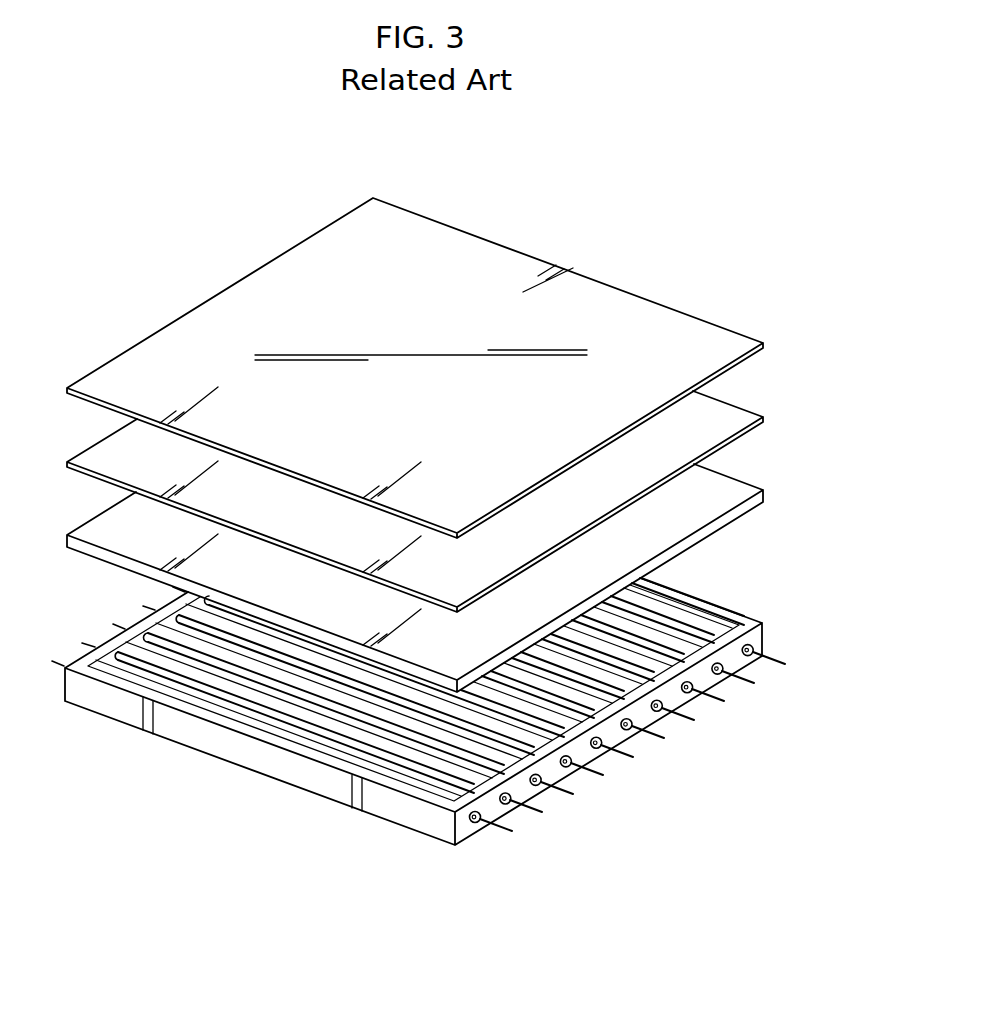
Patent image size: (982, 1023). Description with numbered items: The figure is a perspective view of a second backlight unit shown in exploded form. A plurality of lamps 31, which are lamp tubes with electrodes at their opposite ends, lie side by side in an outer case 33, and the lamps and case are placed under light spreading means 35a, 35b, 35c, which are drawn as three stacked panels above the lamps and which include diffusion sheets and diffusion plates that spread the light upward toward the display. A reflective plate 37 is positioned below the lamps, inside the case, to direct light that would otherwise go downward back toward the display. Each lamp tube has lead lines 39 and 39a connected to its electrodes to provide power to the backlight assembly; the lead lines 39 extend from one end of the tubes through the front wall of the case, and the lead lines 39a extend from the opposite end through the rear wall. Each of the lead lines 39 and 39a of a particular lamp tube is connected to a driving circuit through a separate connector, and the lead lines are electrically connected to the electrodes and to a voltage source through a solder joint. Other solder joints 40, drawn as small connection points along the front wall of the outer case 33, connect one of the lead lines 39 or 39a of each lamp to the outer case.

The lamp 31 is at (276, 713).
The outer case 33 is at (435, 823).
The light spreading means 35a is at (718, 483).
The light spreading means 35b is at (718, 409).
The light spreading means 35c is at (718, 334).
The reflective plate 37 is at (328, 763).
The lead line 39 is at (507, 829).
The lead line 39a is at (65, 665).
The solder joint 40 is at (538, 788).